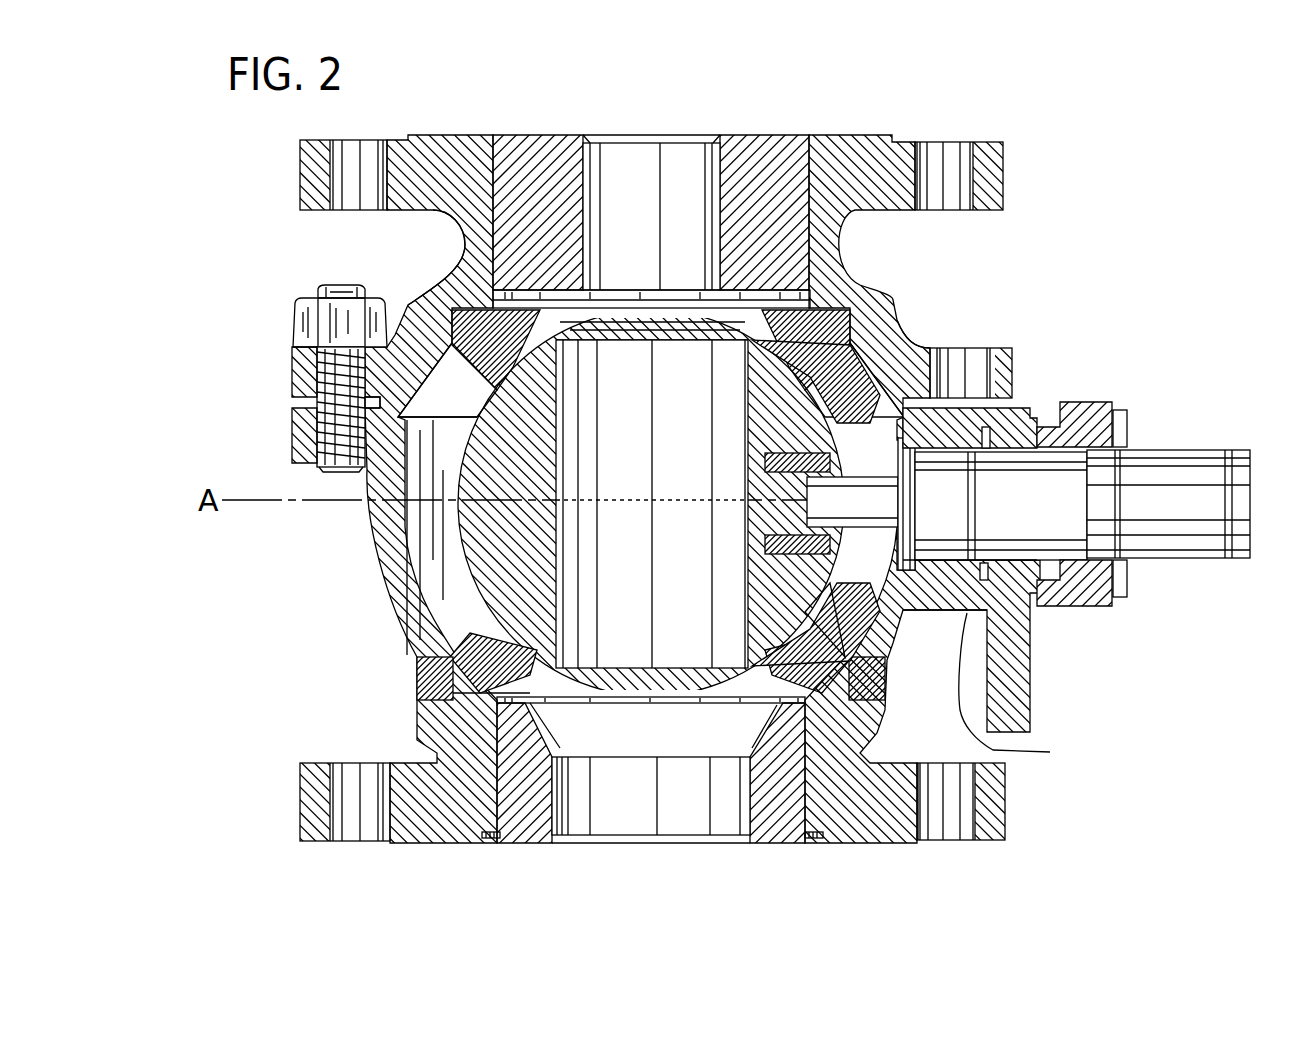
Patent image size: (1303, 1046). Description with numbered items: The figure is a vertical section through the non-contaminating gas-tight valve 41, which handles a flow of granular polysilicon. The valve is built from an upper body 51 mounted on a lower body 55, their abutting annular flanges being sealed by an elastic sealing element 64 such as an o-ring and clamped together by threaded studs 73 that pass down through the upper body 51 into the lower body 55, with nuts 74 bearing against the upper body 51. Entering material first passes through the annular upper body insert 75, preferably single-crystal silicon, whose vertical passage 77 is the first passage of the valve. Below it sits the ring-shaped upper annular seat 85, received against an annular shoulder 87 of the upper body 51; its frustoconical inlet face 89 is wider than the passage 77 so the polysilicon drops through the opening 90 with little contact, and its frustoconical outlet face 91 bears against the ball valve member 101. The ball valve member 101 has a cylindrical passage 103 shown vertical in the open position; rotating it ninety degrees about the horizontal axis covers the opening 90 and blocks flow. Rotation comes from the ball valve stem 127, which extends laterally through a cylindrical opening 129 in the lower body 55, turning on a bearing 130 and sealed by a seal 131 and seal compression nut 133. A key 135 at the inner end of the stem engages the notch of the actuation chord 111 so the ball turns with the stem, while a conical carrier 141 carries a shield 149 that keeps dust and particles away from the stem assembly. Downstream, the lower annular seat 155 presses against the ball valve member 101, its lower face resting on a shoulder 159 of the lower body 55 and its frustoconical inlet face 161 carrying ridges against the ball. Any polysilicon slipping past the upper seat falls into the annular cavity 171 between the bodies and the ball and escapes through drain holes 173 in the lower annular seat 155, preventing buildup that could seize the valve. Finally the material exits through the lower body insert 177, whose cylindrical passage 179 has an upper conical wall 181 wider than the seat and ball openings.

The non-contaminating gas-tight valve 41 is at (846, 90).
The upper body 51 is at (985, 178).
The lower body 55 is at (990, 790).
The elastic sealing element 64 is at (403, 335).
The threaded studs 73 is at (337, 284).
The nuts 74 is at (305, 308).
The upper body insert 75 is at (538, 165).
The passage 77 is at (718, 198).
The upper annular seat 85 is at (440, 325).
The annular shoulder 87 is at (826, 331).
The frustoconical inlet face 89 is at (610, 318).
The opening 90 is at (700, 330).
The frustoconical outlet face 91 is at (785, 355).
The ball valve member 101 is at (540, 455).
The cylindrical passage 103 is at (742, 635).
The actuation chord 111 is at (862, 620).
The ball valve stem 127 is at (1180, 520).
The cylindrical opening 129 is at (1000, 525).
The bearing 130 is at (937, 455).
The seal 131 is at (925, 430).
The seal compression nut 133 is at (1113, 408).
The key 135 is at (800, 510).
The carrier 141 is at (856, 448).
The shield 149 is at (880, 385).
The lower annular seat 155 is at (463, 682).
The shoulder 159 is at (460, 703).
The frustoconical inlet face 161 is at (503, 632).
The annular cavity 171 is at (893, 675).
The drain holes 173 is at (450, 660).
The lower body insert 177 is at (522, 832).
The cylindrical passage 179 is at (560, 790).
The conical wall 181 is at (533, 727).